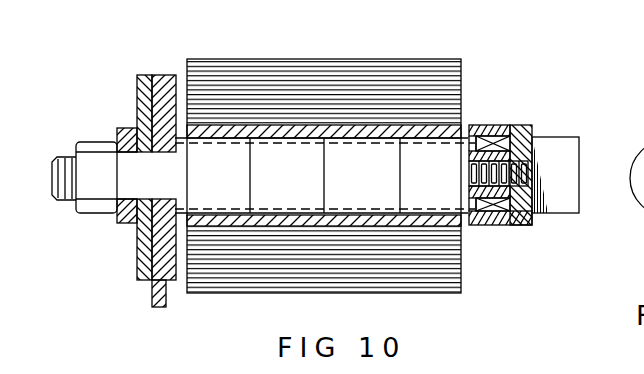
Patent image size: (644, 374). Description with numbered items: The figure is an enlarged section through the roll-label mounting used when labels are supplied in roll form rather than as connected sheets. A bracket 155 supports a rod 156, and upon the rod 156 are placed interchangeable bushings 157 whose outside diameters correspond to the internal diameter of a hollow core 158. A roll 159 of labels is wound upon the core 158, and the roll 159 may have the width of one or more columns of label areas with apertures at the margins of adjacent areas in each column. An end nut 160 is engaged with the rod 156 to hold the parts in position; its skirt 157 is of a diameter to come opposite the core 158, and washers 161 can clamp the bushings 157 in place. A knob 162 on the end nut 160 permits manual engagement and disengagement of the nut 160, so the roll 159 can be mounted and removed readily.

The bracket 155 is at (152, 303).
The rod 156 is at (128, 190).
The interchangeable bushings 157 is at (350, 158).
The hollow core 158 is at (438, 128).
The roll of labels 159 is at (400, 65).
The end nut 160 is at (538, 124).
The washers 161 is at (493, 227).
The knob 162 is at (567, 215).